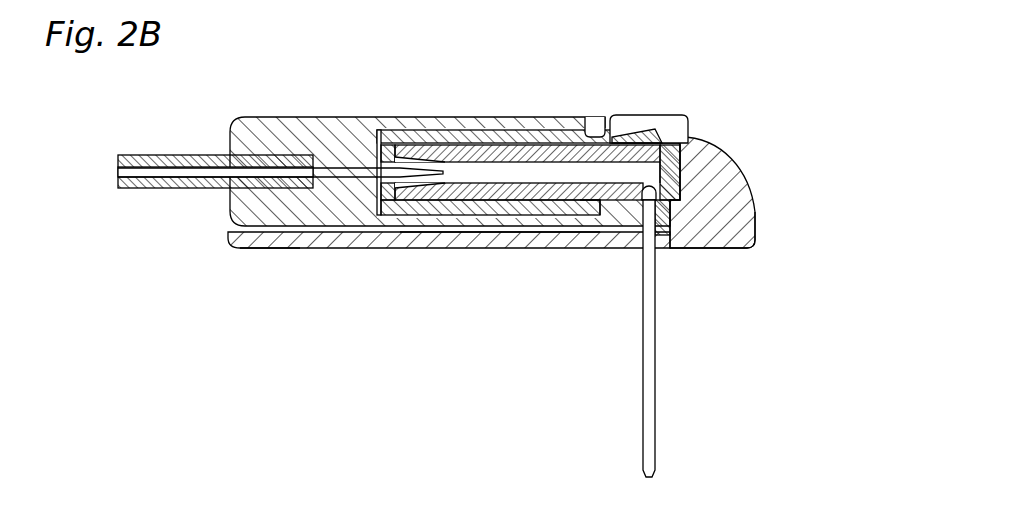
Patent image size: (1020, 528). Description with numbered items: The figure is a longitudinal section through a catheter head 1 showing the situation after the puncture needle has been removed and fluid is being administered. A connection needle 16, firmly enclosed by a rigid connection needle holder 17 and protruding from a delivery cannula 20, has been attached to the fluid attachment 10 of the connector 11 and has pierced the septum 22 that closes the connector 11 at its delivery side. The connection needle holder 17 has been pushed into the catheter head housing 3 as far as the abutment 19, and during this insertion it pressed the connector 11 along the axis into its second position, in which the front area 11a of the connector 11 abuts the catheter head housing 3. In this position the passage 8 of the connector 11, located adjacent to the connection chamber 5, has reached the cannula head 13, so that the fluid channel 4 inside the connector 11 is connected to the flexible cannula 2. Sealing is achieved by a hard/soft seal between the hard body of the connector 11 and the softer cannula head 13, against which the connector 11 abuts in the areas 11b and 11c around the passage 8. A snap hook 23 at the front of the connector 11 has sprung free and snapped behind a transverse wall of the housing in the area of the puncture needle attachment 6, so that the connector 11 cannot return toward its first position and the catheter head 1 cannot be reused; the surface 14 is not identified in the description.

The catheter head 1 is at (742, 141).
The cannula 2 is at (647, 338).
The catheter head housing 3 is at (720, 242).
The fluid channel 4 is at (463, 238).
The connection chamber 5 is at (690, 170).
The puncture needle attachment 6 is at (654, 132).
The passage 8 is at (662, 221).
The fluid attachment 10 is at (384, 158).
The connector 11 is at (504, 149).
The front area 11a is at (682, 161).
The sealing area 11b is at (598, 229).
The sealing area 11c is at (657, 173).
The cannula head 13 is at (672, 201).
The plate top surface 14 is at (527, 234).
The connection needle 16 is at (258, 247).
The connection needle holder 17 is at (336, 128).
The abutment 19 is at (548, 126).
The delivery cannula 20 is at (180, 186).
The septum 22 is at (343, 176).
The snap hook 23 is at (632, 138).